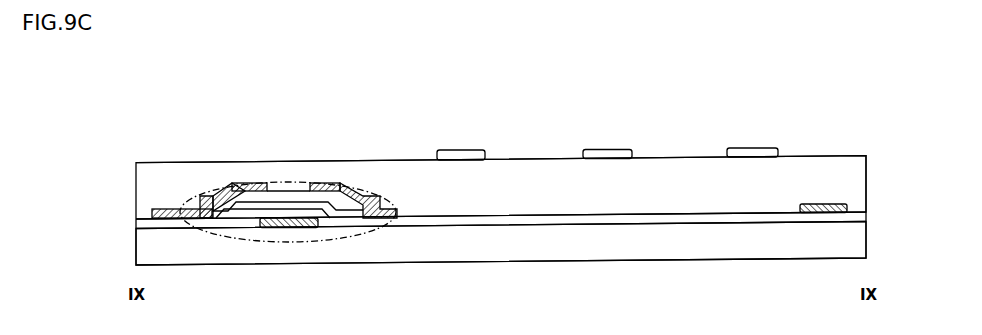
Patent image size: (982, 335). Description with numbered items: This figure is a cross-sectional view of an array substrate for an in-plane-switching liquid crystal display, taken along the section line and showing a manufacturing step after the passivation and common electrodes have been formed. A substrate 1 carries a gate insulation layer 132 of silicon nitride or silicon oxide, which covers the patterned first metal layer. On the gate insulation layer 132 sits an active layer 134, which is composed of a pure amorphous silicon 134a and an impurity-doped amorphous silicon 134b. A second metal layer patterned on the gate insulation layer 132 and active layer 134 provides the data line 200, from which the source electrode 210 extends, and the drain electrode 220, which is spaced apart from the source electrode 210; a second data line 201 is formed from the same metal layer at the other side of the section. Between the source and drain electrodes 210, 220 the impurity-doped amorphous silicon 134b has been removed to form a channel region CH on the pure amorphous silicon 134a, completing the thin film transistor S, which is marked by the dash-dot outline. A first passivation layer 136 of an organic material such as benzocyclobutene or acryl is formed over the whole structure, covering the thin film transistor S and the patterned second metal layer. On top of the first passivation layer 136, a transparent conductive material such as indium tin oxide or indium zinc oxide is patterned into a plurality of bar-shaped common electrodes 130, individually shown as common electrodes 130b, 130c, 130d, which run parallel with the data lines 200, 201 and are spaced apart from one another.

The data line 200 is at (155, 208).
The source electrode 210 is at (213, 195).
The channel region CH is at (290, 181).
The impurity-doped amorphous silicon 134b is at (318, 183).
The pure amorphous silicon 134a is at (364, 192).
The active layer 134 is at (390, 130).
The drain electrode 220 is at (390, 210).
The common electrodes 130 is at (778, 108).
The common electrode 130b is at (469, 153).
The common electrode 130c is at (606, 153).
The common electrode 130d is at (754, 152).
The first passivation layer 136 is at (832, 168).
The substrate 1 is at (501, 244).
The gate insulation layer 132 is at (600, 223).
The data line 201 is at (812, 214).
The thin film transistor S is at (292, 244).